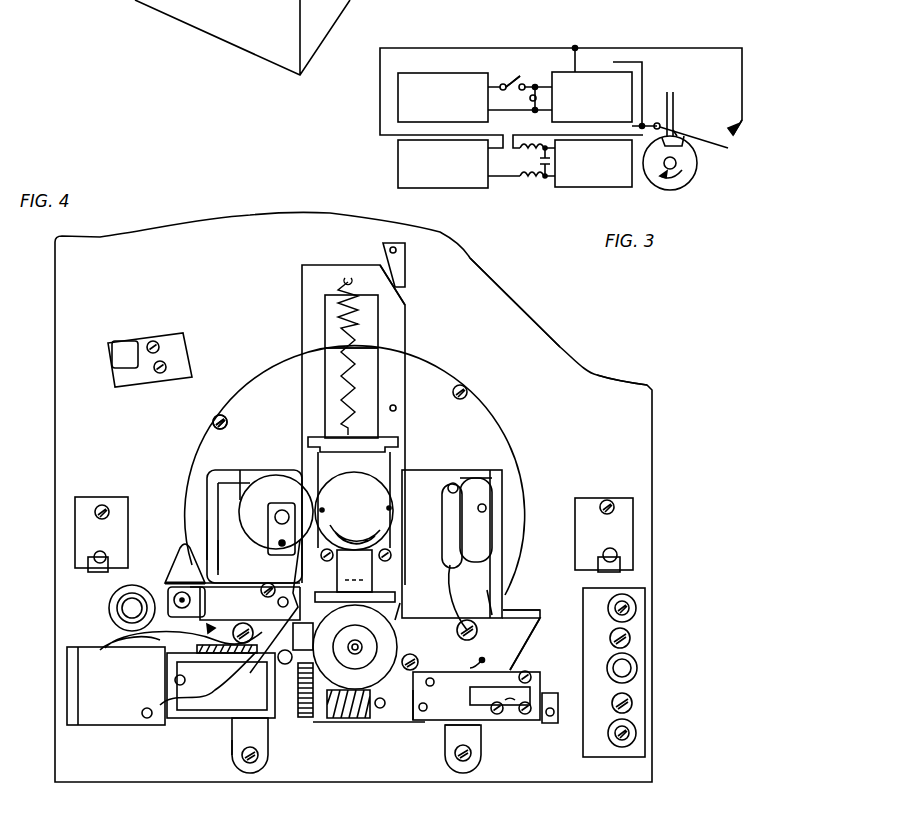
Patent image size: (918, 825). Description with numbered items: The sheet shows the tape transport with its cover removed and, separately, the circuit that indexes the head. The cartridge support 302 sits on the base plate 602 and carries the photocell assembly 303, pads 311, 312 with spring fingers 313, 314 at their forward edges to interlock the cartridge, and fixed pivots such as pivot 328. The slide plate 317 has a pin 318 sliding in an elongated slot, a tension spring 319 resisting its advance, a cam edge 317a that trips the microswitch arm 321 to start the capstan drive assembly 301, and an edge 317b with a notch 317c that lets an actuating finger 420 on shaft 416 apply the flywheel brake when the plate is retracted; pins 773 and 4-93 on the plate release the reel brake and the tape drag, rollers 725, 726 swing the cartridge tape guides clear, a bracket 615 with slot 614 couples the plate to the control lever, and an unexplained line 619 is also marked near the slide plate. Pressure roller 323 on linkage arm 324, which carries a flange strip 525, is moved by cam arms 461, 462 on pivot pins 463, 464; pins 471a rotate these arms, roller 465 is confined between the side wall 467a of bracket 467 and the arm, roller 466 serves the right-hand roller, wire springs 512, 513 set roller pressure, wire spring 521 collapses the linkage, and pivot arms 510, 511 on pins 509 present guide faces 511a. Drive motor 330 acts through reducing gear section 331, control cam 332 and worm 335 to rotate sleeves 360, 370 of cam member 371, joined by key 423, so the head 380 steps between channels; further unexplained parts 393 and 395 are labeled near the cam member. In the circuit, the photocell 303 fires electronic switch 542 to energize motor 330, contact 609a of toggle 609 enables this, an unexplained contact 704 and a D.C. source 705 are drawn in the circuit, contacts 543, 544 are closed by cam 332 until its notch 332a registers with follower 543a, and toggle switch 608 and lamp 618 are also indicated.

In FIG. 4, the cartridge support 302 is at (552, 372).
In FIG. 4, the base plate 602 is at (595, 388).
In FIG. 3, the photocell assembly 303 is at (444, 74).
In FIG. 4, the photocell assembly 303 is at (122, 365).
In FIG. 3, the electronic switch 542 is at (570, 60).
In FIG. 3, the contact 609a is at (514, 73).
In FIG. 3, the contact 704 is at (530, 98).
In FIG. 3, the D.C. source 705 is at (398, 162).
In FIG. 3, the drive motor 330 is at (578, 185).
In FIG. 4, the drive motor 330 is at (108, 718).
In FIG. 3, the control cam 332 is at (685, 180).
In FIG. 4, the control cam 332 is at (295, 718).
In FIG. 3, the notch 332a is at (673, 101).
In FIG. 3, the contact 543 is at (718, 150).
In FIG. 3, the follower 543a is at (678, 137).
In FIG. 3, the contact 544 is at (738, 132).
In FIG. 4, the slide plate 317 is at (322, 337).
In FIG. 4, the cam edge 317a is at (405, 300).
In FIG. 4, the edge 317b is at (540, 668).
In FIG. 4, the notch 317c is at (543, 643).
In FIG. 4, the pin 318 is at (347, 276).
In FIG. 4, the tension spring 319 is at (338, 316).
In FIG. 4, the microswitch arm 321 is at (404, 268).
In FIG. 4, the spring seat line 619 is at (350, 372).
In FIG. 4, the pin 773 is at (397, 410).
In FIG. 4, the roller 726 is at (302, 413).
In FIG. 4, the roller 725 is at (400, 440).
In FIG. 4, the capstan drive assembly 301 is at (392, 466).
In FIG. 4, the head 380 is at (375, 560).
In FIG. 4, the pivot arm 510 is at (212, 505).
In FIG. 4, the wire spring 512 is at (207, 520).
In FIG. 4, the linkage arm 324 is at (210, 545).
In FIG. 4, the wire spring 521 is at (276, 574).
In FIG. 4, the capstan pressure roller 323 is at (262, 498).
In FIG. 4, the flange strip 525 is at (182, 548).
In FIG. 4, the fixed pivot 328 is at (175, 595).
In FIG. 4, the pad 311 is at (82, 500).
In FIG. 4, the spring finger 313 is at (95, 574).
In FIG. 4, the pad 312 is at (587, 508).
In FIG. 4, the spring finger 314 is at (606, 550).
In FIG. 4, the pin 509 is at (462, 480).
In FIG. 4, the pivot arm 511 is at (445, 505).
In FIG. 4, the guide face 511a is at (445, 540).
In FIG. 4, the pin 4-93 is at (516, 475).
In FIG. 4, the wire spring 513 is at (443, 582).
In FIG. 4, the cam member 371 is at (400, 603).
In FIG. 4, the roller 466 is at (472, 628).
In FIG. 4, the pin 471a is at (483, 659).
In FIG. 4, the toggle switch 609 is at (636, 610).
In FIG. 4, the lamp 618 is at (640, 668).
In FIG. 4, the toggle switch 608 is at (637, 735).
In FIG. 4, the reducing gear section 331 is at (225, 712).
In FIG. 4, the bracket 467 is at (181, 649).
In FIG. 4, the side wall 467a is at (208, 678).
In FIG. 4, the roller 465 is at (231, 677).
In FIG. 4, the sleeve 370 is at (370, 617).
In FIG. 4, the hub 393 is at (376, 658).
In FIG. 4, the worm 335 is at (362, 656).
In FIG. 4, the sleeve 360 is at (355, 658).
In FIG. 4, the actuating shaft 416 is at (550, 722).
In FIG. 4, the contact 395 is at (450, 692).
In FIG. 4, the key 423 is at (428, 708).
In FIG. 4, the actuating finger 420 is at (545, 700).
In FIG. 4, the slot 614 is at (510, 702).
In FIG. 4, the bracket 615 is at (477, 723).
In FIG. 4, the cam arm 462 is at (452, 750).
In FIG. 4, the pivot pin 463 is at (250, 773).
In FIG. 4, the cam arm 461 is at (228, 745).
In FIG. 4, the pivot pin 464 is at (465, 765).